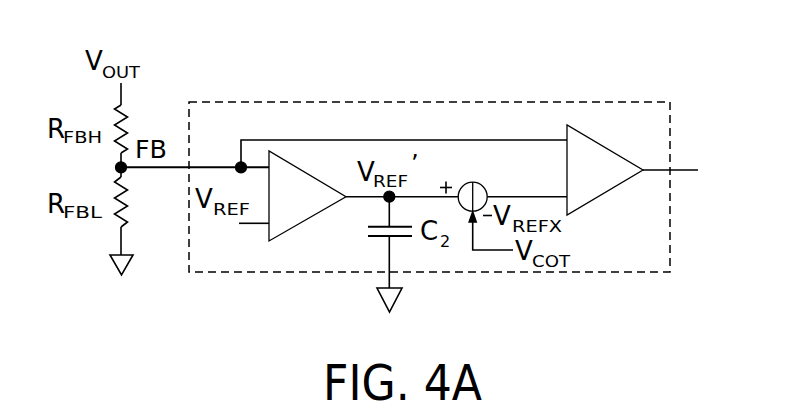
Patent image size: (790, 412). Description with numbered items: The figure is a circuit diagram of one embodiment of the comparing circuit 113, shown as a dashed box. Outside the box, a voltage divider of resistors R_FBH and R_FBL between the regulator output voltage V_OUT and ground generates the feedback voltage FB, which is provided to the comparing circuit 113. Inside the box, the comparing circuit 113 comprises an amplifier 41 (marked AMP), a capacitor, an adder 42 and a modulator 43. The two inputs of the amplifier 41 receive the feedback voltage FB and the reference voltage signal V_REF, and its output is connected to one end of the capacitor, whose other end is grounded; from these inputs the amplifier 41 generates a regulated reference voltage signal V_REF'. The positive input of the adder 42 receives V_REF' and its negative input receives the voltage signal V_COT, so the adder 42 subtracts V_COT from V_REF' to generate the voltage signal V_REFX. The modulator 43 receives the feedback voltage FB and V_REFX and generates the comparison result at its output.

The amplifier 41 is at (309, 156).
The adder 42 is at (491, 171).
The modulator 43 is at (614, 135).
The comparing circuit 113 is at (648, 100).